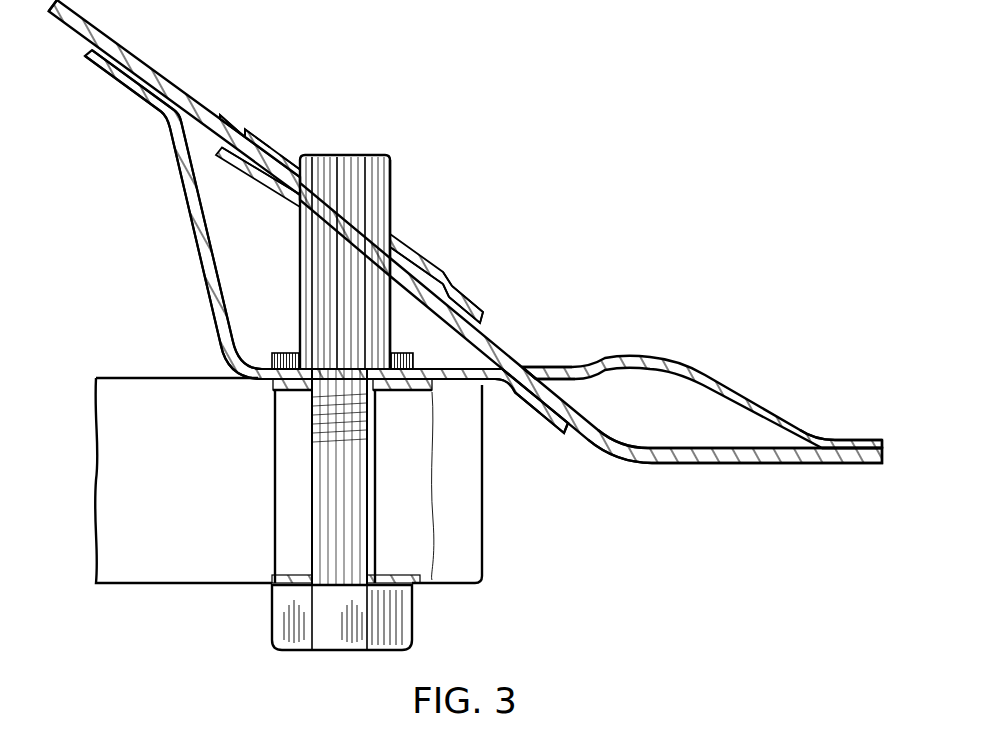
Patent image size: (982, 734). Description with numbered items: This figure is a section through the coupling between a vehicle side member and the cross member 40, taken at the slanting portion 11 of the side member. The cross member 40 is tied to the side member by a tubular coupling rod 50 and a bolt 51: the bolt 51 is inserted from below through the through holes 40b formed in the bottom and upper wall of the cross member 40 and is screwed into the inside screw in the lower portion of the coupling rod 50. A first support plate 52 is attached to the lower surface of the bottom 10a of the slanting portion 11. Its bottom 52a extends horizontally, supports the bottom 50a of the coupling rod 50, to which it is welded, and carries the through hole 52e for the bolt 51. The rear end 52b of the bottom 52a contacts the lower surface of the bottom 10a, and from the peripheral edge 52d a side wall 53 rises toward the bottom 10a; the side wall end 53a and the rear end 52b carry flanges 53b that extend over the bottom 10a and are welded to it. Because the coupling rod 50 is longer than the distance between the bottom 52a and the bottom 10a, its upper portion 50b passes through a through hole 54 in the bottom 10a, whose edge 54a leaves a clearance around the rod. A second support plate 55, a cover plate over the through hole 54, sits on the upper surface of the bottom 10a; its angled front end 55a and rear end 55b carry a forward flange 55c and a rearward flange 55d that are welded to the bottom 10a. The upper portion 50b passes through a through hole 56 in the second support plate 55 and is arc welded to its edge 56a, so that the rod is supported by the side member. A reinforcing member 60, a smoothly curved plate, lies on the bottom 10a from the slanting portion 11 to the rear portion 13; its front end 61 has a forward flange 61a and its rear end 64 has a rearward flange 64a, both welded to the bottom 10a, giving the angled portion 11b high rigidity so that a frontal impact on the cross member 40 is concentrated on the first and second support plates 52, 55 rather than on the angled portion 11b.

The bottom 10a is at (80, 27).
The slanting portion 11 is at (162, 62).
The angled portion 11b is at (620, 465).
The rear portion 13 is at (722, 468).
The cross member 40 is at (184, 581).
The through holes 40b is at (378, 394).
The coupling rod 50 is at (394, 162).
The bottom 50a is at (284, 352).
The upper portion 50b is at (392, 193).
The bolt 51 is at (414, 615).
The first support plate 52 is at (205, 283).
The bottom 52a is at (273, 392).
The rear end 52b is at (512, 396).
The peripheral edge 52d is at (260, 376).
The through hole 52e is at (407, 355).
The side wall 53 is at (181, 182).
The end 53a is at (162, 109).
The flanges 53b is at (117, 67).
The through hole 54 is at (291, 208).
The edge 54a is at (271, 188).
The second support plate 55 is at (278, 131).
The front end 55a is at (250, 135).
The rear end 55b is at (461, 287).
The flange 55c is at (221, 114).
The flange 55d is at (470, 319).
The through hole 56 is at (400, 241).
The edge 56a is at (301, 156).
The reinforcing member 60 is at (736, 364).
The front end 61 is at (542, 368).
The flange 61a is at (527, 365).
The rear end 64 is at (838, 439).
The flange 64a is at (866, 440).